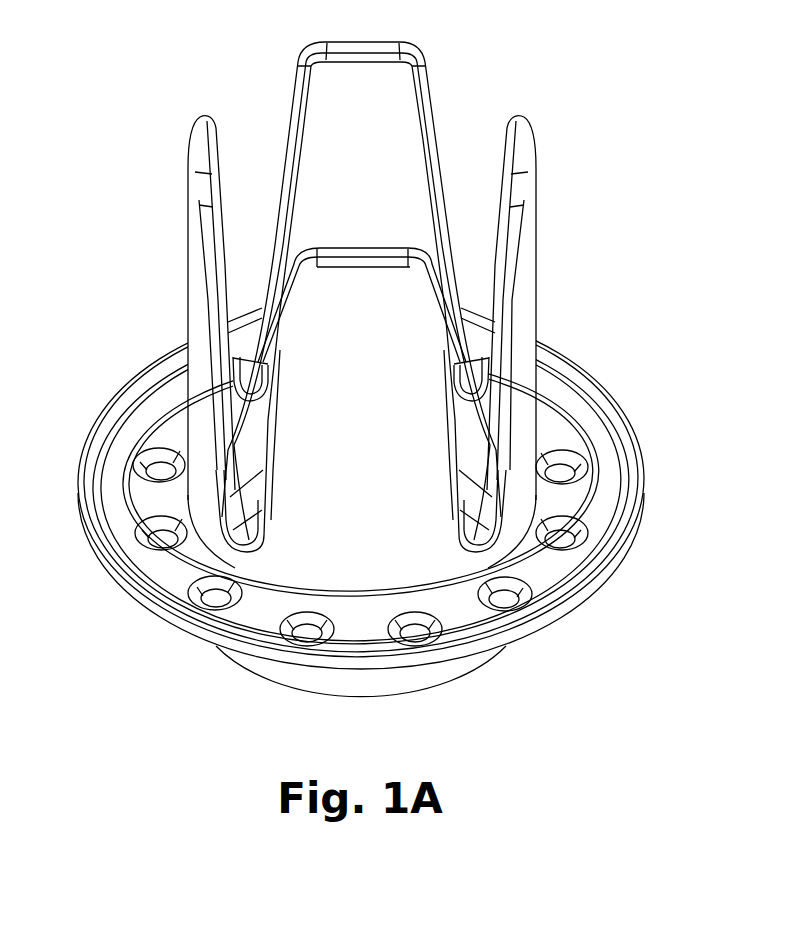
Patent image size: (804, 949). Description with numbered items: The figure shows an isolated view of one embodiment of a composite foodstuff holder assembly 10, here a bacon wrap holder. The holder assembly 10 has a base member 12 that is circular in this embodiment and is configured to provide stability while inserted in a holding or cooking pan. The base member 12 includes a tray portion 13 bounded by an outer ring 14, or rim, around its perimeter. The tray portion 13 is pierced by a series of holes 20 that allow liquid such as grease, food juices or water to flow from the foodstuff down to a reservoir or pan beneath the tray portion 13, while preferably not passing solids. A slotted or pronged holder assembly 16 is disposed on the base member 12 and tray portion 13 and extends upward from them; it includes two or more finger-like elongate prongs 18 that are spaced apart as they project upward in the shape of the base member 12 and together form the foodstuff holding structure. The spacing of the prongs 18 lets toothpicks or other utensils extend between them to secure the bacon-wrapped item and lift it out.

The composite foodstuff holder assembly 10 is at (379, 395).
The base member 12 is at (460, 668).
The tray portion 13 is at (590, 493).
The outer ring 14 is at (597, 423).
The slotted or pronged holder assembly 16 is at (180, 224).
The elongate prongs 18 is at (401, 89).
The holes 20 is at (137, 530).